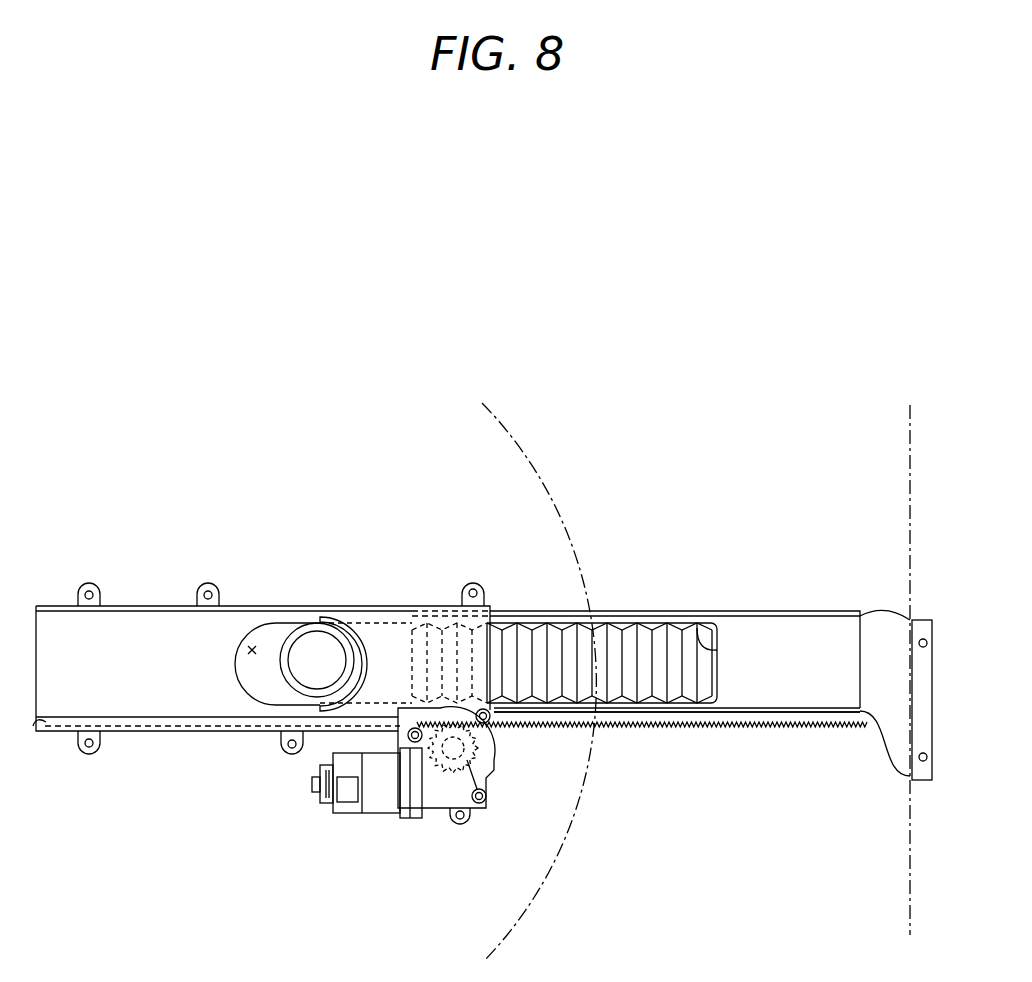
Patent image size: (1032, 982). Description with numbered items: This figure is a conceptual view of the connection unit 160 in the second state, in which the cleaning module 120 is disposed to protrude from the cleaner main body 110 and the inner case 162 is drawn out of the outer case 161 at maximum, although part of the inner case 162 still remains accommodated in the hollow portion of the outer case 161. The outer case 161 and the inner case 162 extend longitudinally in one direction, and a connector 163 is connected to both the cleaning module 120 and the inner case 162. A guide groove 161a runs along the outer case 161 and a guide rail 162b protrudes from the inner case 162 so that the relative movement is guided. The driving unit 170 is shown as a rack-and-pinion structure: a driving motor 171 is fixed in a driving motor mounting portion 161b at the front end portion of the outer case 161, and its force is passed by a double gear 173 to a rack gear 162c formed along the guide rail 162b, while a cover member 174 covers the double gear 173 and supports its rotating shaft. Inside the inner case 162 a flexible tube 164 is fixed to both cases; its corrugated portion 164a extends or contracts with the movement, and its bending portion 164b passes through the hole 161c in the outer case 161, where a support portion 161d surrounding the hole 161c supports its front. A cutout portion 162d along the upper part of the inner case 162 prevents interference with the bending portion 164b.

The cleaner main body 110 is at (527, 458).
The cleaning module 120 is at (910, 452).
The connection unit 160 is at (310, 515).
The outer case 161 is at (68, 638).
The guide groove 161a is at (47, 725).
The driving motor mounting portion 161b is at (405, 812).
The hole 161c is at (251, 645).
The support portion 161d is at (358, 622).
The inner case 162 is at (795, 640).
The guide rail 162b is at (750, 715).
The rack gear 162c is at (800, 730).
The cutout portion 162d is at (702, 628).
The connector 163 is at (893, 730).
The flexible tube 164 is at (538, 497).
The corrugated portion 164a is at (540, 642).
The bending portion 164b is at (355, 667).
The driving unit 170 is at (426, 848).
The driving motor 171 is at (373, 803).
The double gear 173 is at (480, 800).
The cover member 174 is at (438, 795).